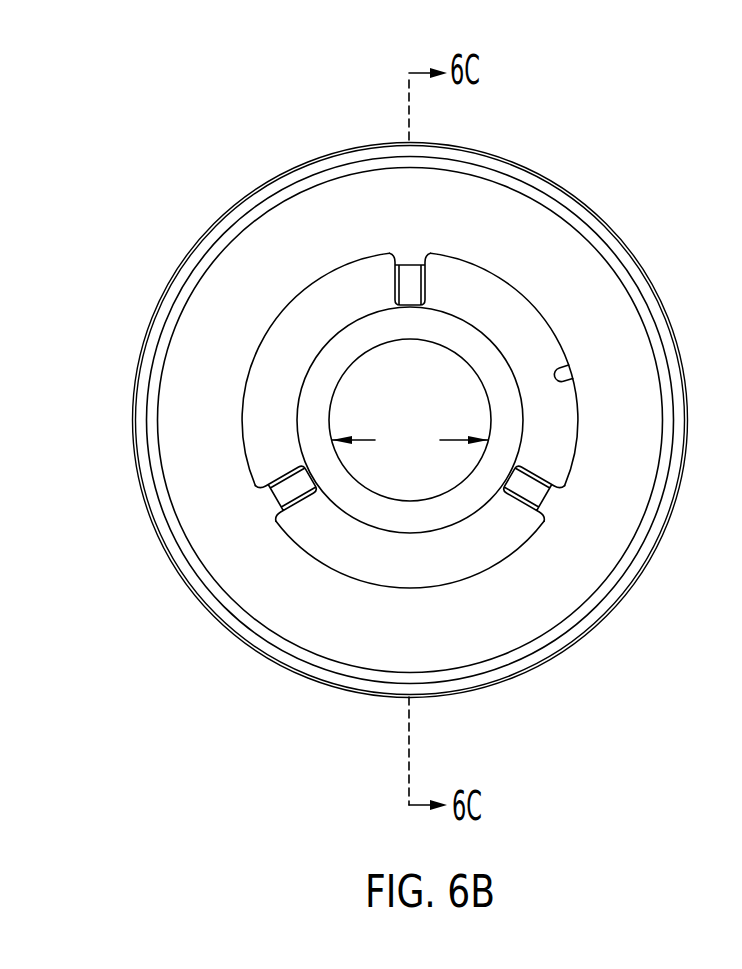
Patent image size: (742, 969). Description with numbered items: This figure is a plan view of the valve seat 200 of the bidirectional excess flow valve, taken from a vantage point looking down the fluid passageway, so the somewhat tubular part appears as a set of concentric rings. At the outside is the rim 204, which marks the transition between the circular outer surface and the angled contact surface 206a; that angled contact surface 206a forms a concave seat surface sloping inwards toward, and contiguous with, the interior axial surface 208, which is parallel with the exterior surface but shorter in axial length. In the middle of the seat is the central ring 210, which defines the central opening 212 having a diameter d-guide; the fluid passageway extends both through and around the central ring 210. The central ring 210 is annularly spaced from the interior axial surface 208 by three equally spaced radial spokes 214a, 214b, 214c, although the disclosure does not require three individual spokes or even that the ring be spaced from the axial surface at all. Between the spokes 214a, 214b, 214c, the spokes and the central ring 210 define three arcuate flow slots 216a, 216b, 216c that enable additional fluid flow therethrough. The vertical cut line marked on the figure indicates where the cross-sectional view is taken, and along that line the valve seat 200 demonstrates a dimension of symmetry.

The valve seat 200 is at (246, 103).
The rim 204 is at (642, 572).
The angled contact surface 206a is at (355, 643).
The interior axial surface 208 is at (560, 377).
The central ring 210 is at (478, 345).
The central opening 212 is at (425, 408).
The radial spoke 214a is at (405, 283).
The radial spoke 214b is at (533, 485).
The radial spoke 214c is at (295, 488).
The arcuate flow slot 216a is at (475, 287).
The arcuate flow slot 216b is at (452, 562).
The arcuate flow slot 216c is at (270, 362).